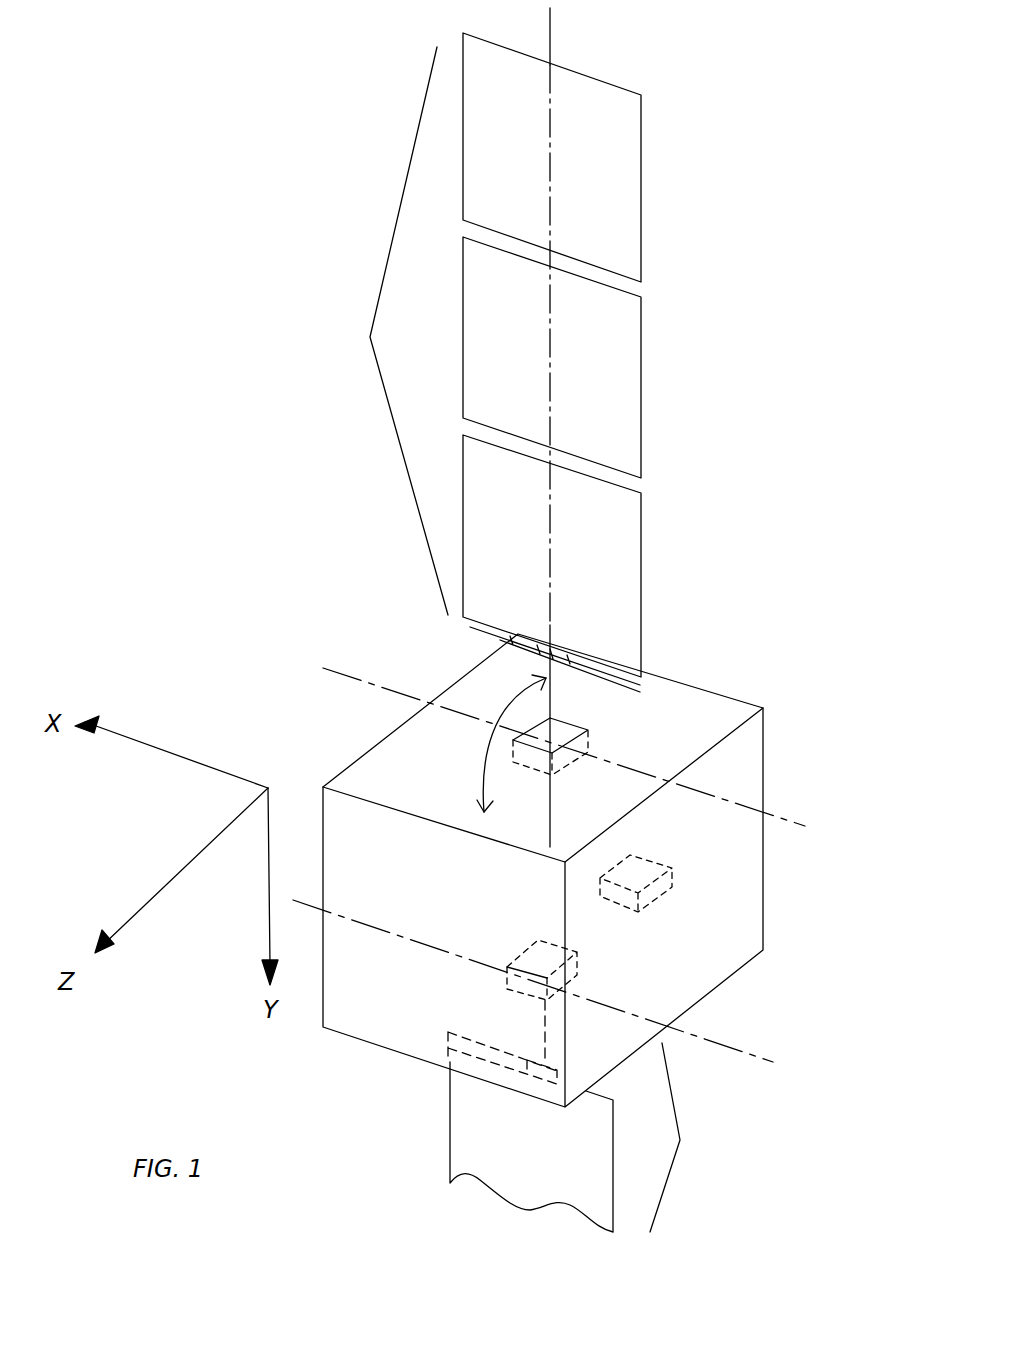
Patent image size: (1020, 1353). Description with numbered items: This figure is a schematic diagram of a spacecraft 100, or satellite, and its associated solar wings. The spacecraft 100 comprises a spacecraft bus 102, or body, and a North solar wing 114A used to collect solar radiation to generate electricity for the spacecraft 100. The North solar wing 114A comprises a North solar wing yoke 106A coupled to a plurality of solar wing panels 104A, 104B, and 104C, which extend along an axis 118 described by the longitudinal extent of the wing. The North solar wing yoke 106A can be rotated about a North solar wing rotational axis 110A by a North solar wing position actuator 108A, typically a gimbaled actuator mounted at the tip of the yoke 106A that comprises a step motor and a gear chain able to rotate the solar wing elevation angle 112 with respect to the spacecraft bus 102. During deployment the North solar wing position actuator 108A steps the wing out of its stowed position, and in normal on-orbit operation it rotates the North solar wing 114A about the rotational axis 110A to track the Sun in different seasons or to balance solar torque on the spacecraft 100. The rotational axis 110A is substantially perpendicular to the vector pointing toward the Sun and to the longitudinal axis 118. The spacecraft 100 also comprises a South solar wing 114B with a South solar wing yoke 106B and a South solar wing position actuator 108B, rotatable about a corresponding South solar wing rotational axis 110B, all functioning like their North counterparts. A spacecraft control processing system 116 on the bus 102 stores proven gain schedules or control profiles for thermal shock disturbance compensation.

The spacecraft 100 is at (170, 363).
The spacecraft bus 102 is at (720, 690).
The solar wing panel 104A is at (645, 200).
The solar wing panel 104B is at (646, 373).
The solar wing panel 104C is at (646, 533).
The North solar wing yoke 106A is at (488, 638).
The South solar wing yoke 106B is at (470, 1040).
The North solar wing position actuator 108A is at (583, 729).
The South solar wing position actuator 108B is at (580, 958).
The North solar wing rotational axis 110A is at (790, 822).
The South solar wing rotational axis 110B is at (571, 990).
The solar wing elevation angle 112 is at (487, 768).
The North solar wing 114A is at (371, 331).
The South solar wing 114B is at (600, 1137).
The spacecraft control processing system 116 is at (672, 868).
The axis 118 is at (551, 42).